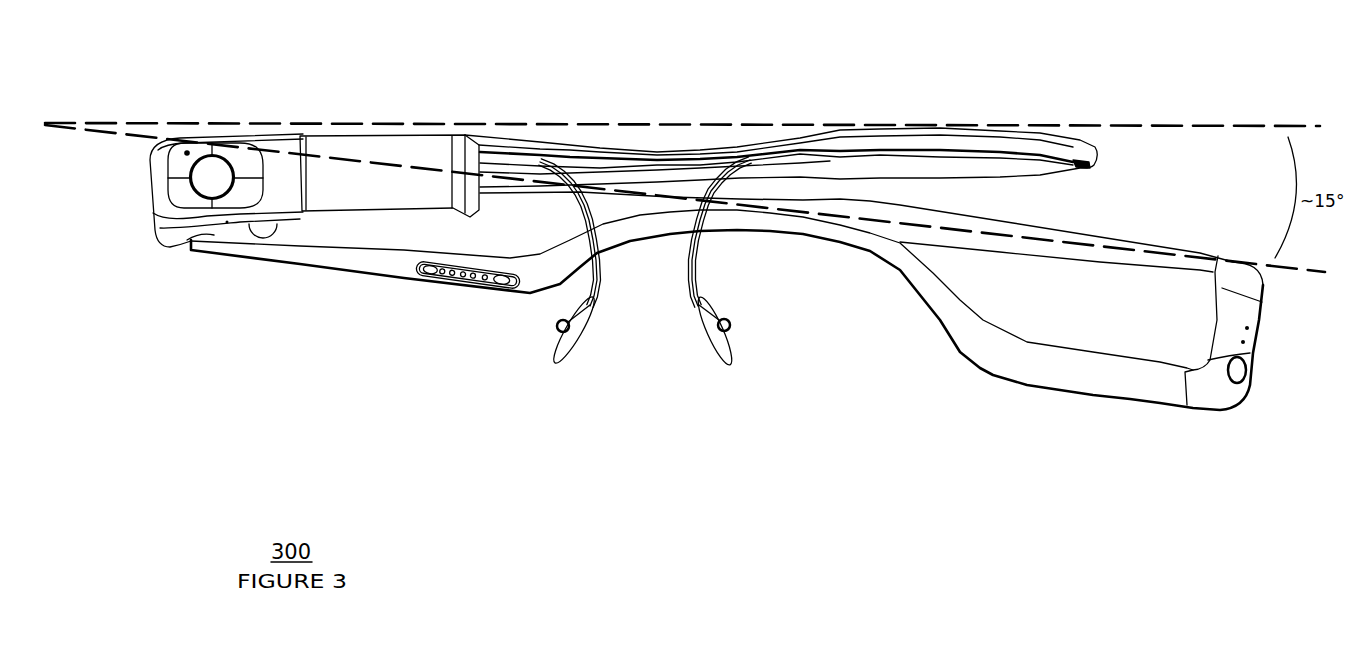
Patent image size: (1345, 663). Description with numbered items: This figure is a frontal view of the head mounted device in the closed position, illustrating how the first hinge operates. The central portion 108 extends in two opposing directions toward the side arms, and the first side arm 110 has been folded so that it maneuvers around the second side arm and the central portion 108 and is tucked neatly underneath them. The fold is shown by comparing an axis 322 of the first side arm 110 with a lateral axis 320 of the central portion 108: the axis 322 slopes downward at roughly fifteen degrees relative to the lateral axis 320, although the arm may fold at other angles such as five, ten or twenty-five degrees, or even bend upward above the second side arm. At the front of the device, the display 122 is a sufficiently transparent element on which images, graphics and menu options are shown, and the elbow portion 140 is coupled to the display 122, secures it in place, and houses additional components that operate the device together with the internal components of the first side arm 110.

The central portion 108 is at (658, 165).
The first side arm 110 is at (1067, 370).
The display 122 is at (363, 138).
The elbow portion 140 is at (150, 158).
The lateral axis 320 is at (1262, 126).
The axis 322 is at (1309, 275).